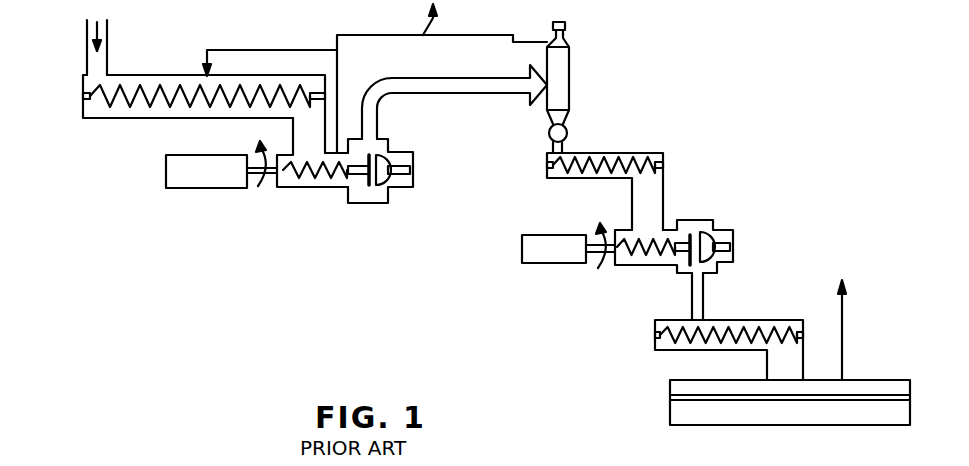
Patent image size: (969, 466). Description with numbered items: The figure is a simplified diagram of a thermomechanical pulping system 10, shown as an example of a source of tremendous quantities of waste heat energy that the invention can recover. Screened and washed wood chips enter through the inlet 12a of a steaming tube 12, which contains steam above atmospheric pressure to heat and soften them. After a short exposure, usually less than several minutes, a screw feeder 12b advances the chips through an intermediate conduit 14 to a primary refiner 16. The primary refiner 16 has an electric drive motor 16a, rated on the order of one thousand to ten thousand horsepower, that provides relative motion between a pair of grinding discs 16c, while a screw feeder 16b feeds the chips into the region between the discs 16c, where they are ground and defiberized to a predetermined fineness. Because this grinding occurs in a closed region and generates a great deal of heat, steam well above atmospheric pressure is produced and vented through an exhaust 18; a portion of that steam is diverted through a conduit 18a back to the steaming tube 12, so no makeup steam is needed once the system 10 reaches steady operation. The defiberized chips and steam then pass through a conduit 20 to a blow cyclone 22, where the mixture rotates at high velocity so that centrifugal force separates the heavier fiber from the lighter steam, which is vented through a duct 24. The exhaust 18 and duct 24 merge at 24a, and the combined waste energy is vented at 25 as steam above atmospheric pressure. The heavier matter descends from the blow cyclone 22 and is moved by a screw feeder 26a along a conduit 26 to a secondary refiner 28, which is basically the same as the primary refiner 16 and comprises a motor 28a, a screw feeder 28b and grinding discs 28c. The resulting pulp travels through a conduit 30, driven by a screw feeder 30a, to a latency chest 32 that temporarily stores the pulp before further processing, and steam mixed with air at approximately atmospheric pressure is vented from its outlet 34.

The thermomechanical pulping system 10 is at (195, 303).
The steaming tube 12 is at (113, 120).
The inlet 12a is at (87, 50).
The screw feeder 12b is at (148, 85).
The intermediate conduit 14 is at (293, 135).
The primary refiner 16 is at (294, 197).
The electric drive motor 16a is at (207, 188).
The screw feeder 16b is at (322, 185).
The grinding discs 16c is at (372, 185).
The exhaust 18 is at (337, 70).
The conduit 18a is at (292, 50).
The conduit 20 is at (447, 93).
The blow cyclone 22 is at (569, 72).
The duct 24 is at (532, 42).
The merge point 24a is at (428, 34).
The vent 25 is at (430, 18).
The conduit 26 is at (637, 153).
The screw feeder 26a is at (597, 158).
The secondary refiner 28 is at (695, 206).
The motor 28a is at (545, 263).
The screw feeder 28b is at (650, 265).
The grinding discs 28c is at (690, 245).
The conduit 30 is at (738, 318).
The screw feeder 30a is at (668, 350).
The latency chest 32 is at (670, 412).
The outlet 34 is at (843, 292).